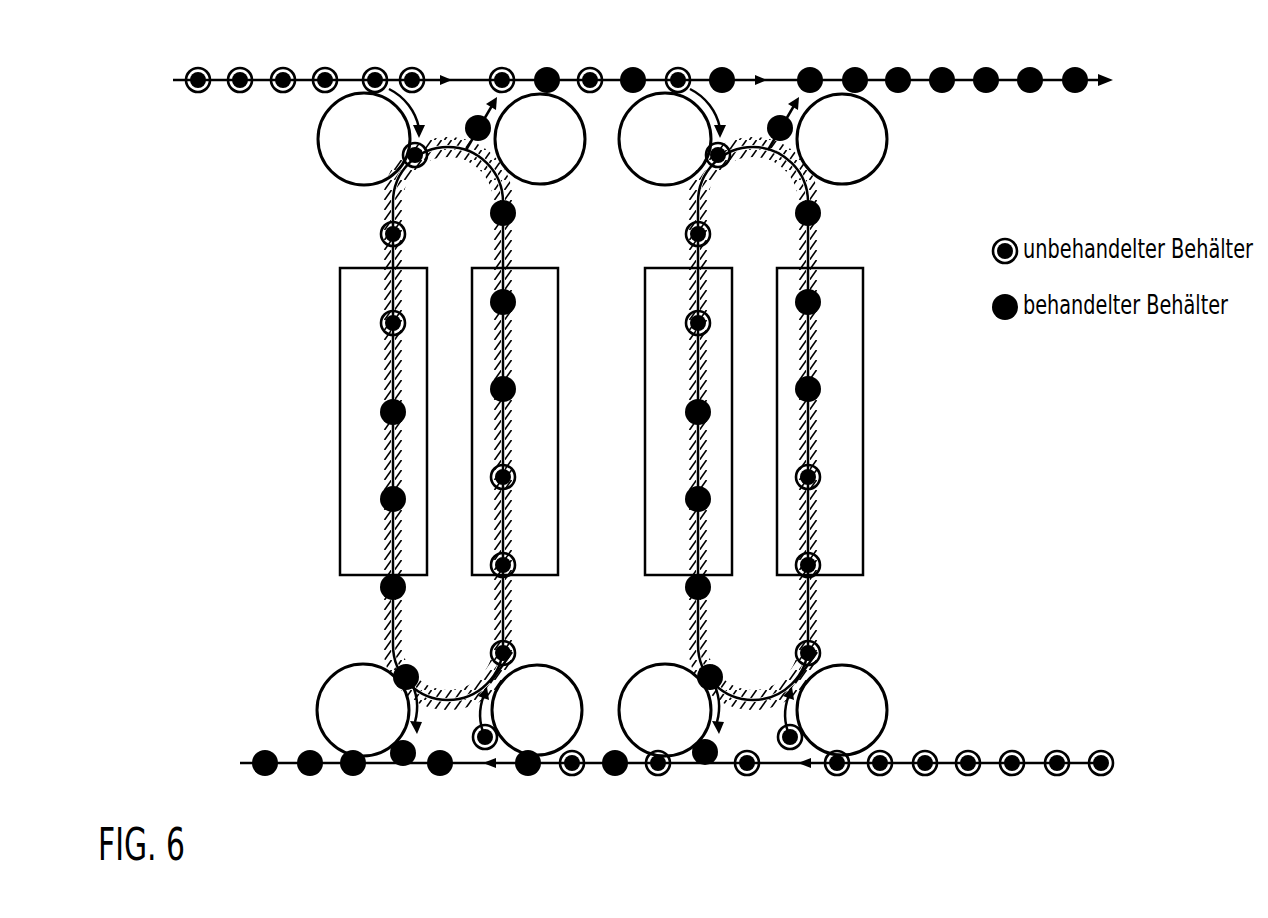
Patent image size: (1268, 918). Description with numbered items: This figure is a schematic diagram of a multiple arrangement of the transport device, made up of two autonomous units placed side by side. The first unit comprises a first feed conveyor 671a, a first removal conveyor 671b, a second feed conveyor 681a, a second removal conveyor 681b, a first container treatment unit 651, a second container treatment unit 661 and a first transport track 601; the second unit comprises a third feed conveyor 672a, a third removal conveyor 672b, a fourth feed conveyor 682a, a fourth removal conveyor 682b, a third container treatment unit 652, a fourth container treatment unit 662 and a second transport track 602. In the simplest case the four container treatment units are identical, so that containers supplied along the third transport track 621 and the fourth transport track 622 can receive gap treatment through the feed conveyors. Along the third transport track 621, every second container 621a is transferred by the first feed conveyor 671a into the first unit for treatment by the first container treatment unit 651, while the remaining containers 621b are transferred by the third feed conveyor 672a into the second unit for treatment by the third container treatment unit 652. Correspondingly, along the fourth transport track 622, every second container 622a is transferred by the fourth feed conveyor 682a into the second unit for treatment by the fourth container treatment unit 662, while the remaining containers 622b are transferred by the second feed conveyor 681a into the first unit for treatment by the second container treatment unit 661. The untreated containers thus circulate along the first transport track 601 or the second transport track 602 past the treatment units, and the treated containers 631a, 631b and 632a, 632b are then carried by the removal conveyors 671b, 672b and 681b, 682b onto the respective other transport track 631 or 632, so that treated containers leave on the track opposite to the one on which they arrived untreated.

The first transport track 601 is at (388, 206).
The second transport track 602 is at (813, 230).
The third transport track 621 is at (197, 95).
The container 621a is at (374, 67).
The remaining container 621b is at (413, 67).
The fourth transport track 622 is at (1011, 778).
The container 622a is at (830, 778).
The remaining container 622b is at (572, 778).
The transport track 631 is at (263, 778).
The treated container 631a is at (401, 770).
The treated container 631b is at (704, 770).
The transport track 632 is at (1074, 67).
The treated container 632a is at (810, 67).
The treated container 632b is at (546, 67).
The first container treatment unit 651 is at (340, 339).
The third container treatment unit 652 is at (645, 339).
The second container treatment unit 661 is at (558, 382).
The fourth container treatment unit 662 is at (863, 382).
The first feed conveyor 671a is at (318, 139).
The first removal conveyor 671b is at (318, 708).
The third feed conveyor 672a is at (637, 184).
The third removal conveyor 672b is at (635, 667).
The second feed conveyor 681a is at (556, 667).
The second removal conveyor 681b is at (557, 184).
The fourth feed conveyor 682a is at (888, 710).
The fourth removal conveyor 682b is at (888, 139).